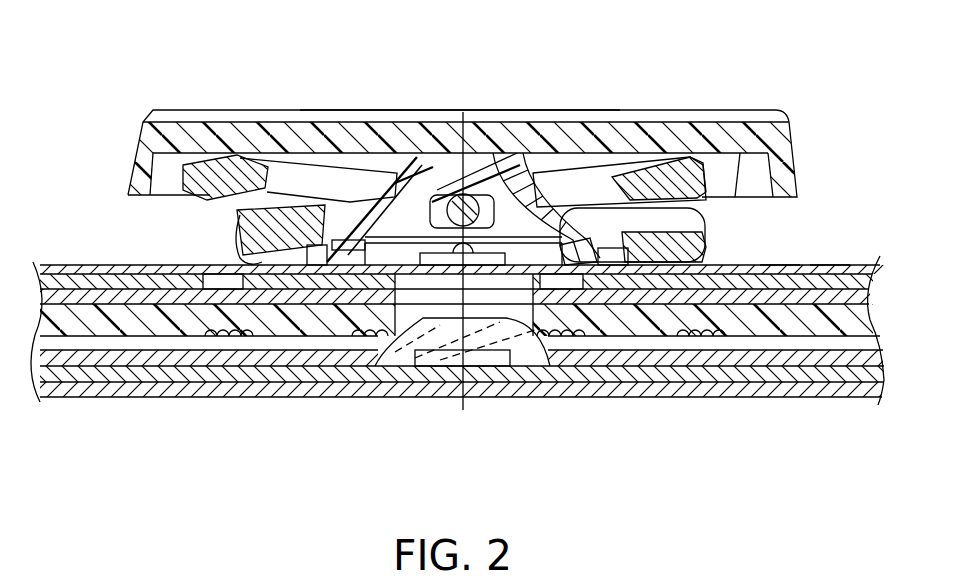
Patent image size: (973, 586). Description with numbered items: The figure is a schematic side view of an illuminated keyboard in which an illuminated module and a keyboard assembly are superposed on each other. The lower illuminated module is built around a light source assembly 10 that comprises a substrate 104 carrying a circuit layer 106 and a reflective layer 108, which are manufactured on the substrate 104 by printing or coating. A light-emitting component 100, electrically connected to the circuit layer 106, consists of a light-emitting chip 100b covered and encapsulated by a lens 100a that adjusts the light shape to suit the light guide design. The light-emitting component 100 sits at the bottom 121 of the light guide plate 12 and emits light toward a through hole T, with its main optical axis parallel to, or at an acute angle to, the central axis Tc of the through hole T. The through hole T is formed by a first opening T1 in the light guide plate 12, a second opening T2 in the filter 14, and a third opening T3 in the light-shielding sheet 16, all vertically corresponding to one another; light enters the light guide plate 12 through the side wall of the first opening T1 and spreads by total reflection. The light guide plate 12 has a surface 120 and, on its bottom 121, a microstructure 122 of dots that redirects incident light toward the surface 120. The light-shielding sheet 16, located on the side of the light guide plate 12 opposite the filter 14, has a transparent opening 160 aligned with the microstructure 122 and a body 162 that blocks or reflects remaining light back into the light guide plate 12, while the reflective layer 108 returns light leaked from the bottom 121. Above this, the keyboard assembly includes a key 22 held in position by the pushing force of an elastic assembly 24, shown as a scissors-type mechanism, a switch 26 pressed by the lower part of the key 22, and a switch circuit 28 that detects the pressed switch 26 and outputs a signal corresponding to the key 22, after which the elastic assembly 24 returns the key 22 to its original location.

The light source assembly 10 is at (705, 490).
The light guide plate 12 is at (858, 320).
The filter 14 is at (783, 266).
The light-shielding sheet 16 is at (860, 282).
The key 22 is at (560, 135).
The elastic assembly 24 is at (612, 173).
The switch 26 is at (497, 197).
The switch circuit 28 is at (830, 266).
The light-emitting component 100 is at (471, 405).
The lens 100a is at (528, 345).
The light-emitting chip 100b is at (462, 402).
The substrate 104 is at (568, 388).
The circuit layer 106 is at (633, 375).
The reflective layer 108 is at (677, 365).
The surface 120 is at (139, 305).
The bottom 121 is at (138, 339).
The microstructure 122 is at (207, 289).
The transparent opening 160 is at (342, 282).
The body 162 is at (268, 292).
The through hole T is at (453, 58).
The first opening T1 is at (397, 313).
The second opening T2 is at (420, 293).
The third opening T3 is at (457, 283).
The central axis Tc is at (462, 119).